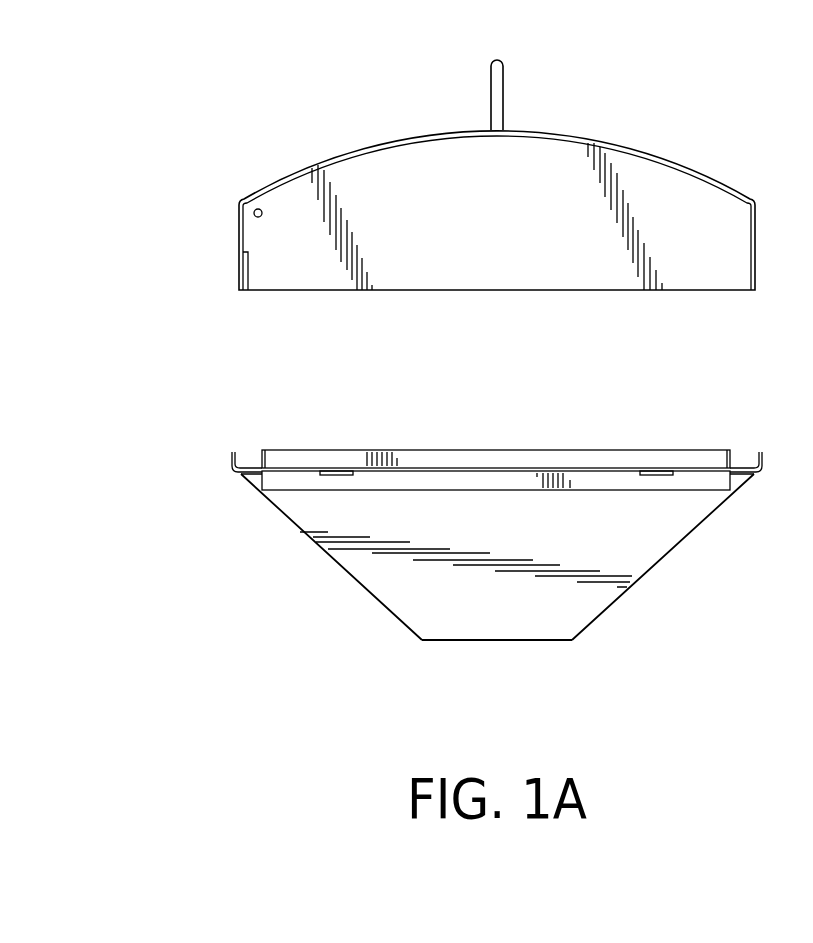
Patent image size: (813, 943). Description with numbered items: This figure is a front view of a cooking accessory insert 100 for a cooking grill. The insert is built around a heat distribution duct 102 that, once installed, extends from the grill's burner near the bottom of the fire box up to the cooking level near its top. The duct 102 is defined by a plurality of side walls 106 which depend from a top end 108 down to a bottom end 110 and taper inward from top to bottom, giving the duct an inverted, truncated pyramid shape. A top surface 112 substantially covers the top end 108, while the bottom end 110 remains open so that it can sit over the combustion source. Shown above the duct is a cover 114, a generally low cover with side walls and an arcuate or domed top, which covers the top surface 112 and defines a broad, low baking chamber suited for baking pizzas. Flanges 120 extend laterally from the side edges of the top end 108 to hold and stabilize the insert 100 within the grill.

The cooking accessory insert 100 is at (197, 100).
The heat distribution duct 102 is at (367, 592).
The side walls 106 is at (295, 527).
The top end 108 is at (748, 477).
The bottom end 110 is at (572, 641).
The top surface 112 is at (742, 467).
The cover 114 is at (710, 171).
The flanges 120 is at (253, 469).